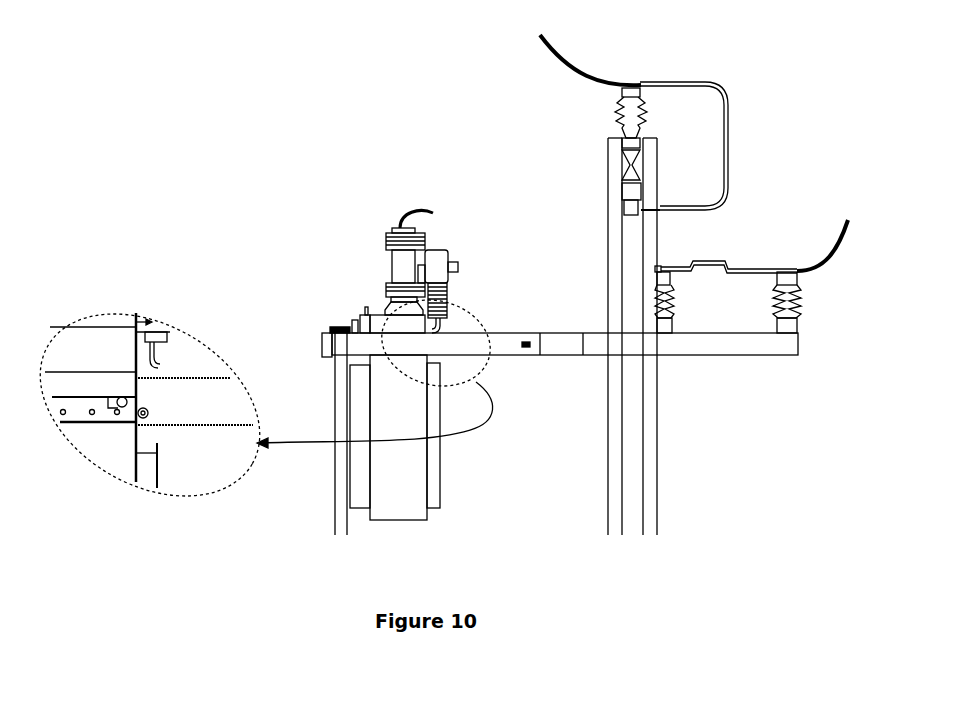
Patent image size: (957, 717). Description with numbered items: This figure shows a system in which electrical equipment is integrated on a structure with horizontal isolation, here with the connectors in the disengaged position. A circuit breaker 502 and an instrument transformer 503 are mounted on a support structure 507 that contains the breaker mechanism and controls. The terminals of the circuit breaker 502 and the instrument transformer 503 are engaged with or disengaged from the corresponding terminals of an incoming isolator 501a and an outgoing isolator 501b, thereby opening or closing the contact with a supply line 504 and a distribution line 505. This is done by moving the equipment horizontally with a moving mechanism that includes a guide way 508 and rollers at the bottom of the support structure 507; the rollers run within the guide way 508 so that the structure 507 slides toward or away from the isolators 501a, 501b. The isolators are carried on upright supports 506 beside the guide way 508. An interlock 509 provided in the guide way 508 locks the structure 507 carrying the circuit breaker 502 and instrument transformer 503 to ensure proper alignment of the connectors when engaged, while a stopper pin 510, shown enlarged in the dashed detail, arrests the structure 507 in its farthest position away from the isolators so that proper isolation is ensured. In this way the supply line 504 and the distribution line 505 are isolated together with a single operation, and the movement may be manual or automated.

The incoming isolator 501a is at (657, 218).
The outgoing isolator 501b is at (682, 277).
The circuit breaker 502 is at (400, 262).
The instrument transformer 503 is at (440, 265).
The supply line 504 is at (563, 58).
The distribution line 505 is at (832, 243).
The support posts 506 is at (650, 443).
The support structure 507 is at (408, 477).
The guide way 508 is at (505, 342).
The interlock 509 is at (556, 344).
The stopper pin 510 is at (152, 410).